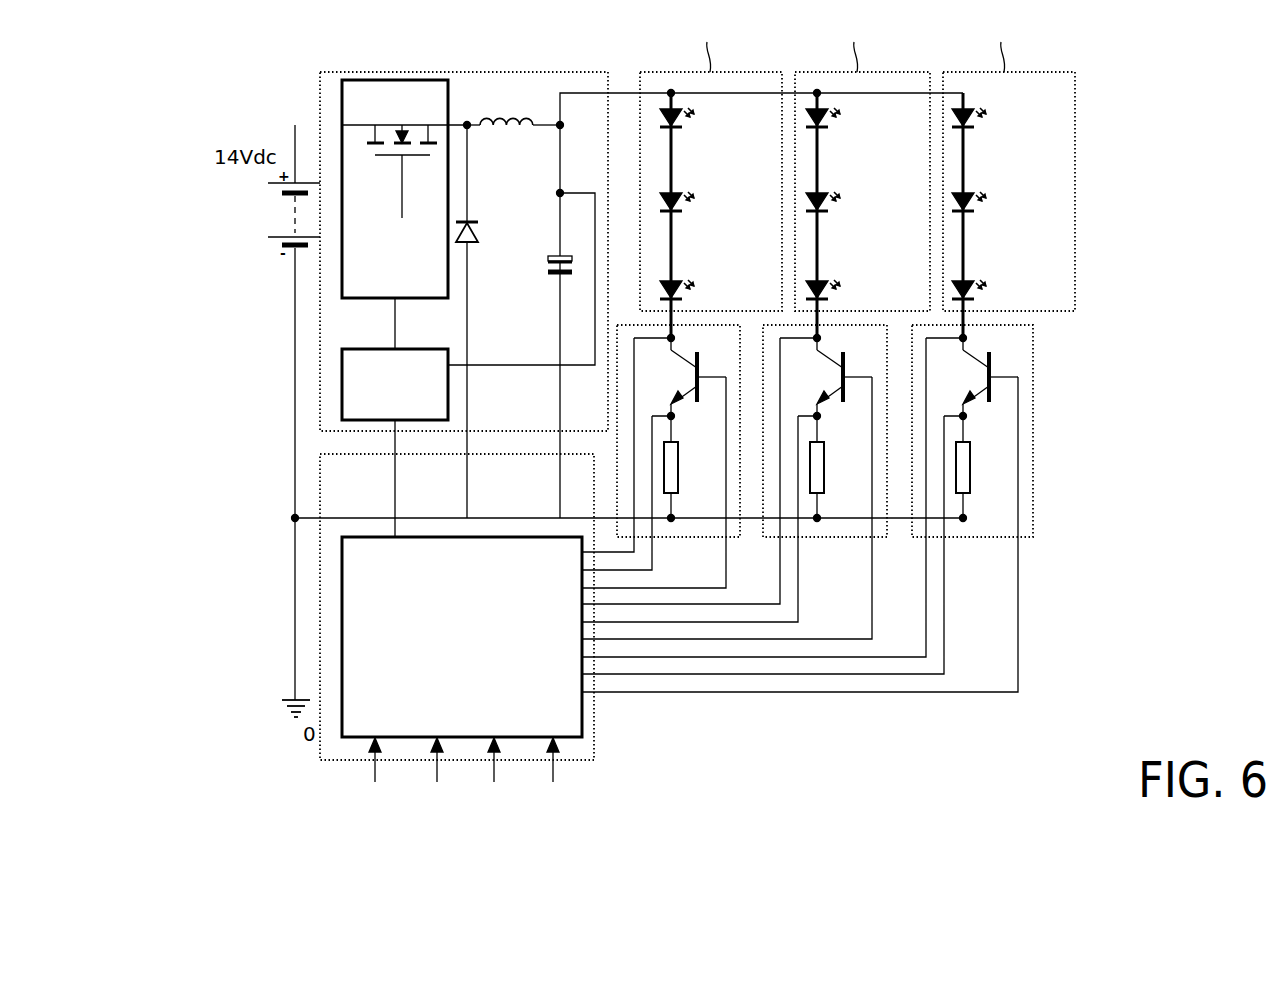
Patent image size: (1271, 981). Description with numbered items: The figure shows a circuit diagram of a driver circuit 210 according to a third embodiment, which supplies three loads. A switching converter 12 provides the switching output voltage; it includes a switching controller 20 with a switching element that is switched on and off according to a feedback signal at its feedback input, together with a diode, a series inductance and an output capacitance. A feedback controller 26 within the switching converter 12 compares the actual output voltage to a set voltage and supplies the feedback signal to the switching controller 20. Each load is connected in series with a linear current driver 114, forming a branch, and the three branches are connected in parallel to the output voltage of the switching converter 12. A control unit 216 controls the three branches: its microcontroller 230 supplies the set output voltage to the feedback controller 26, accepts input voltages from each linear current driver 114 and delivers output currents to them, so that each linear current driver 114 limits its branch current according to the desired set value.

The switching converter 12 is at (466, 72).
The switching controller 20 is at (414, 252).
The feedback controller 26 is at (414, 400).
The microcontroller 230 is at (483, 650).
The control unit 216 is at (594, 718).
The driver circuit 210 is at (1135, 124).
The linear current driver 114 is at (1034, 390).